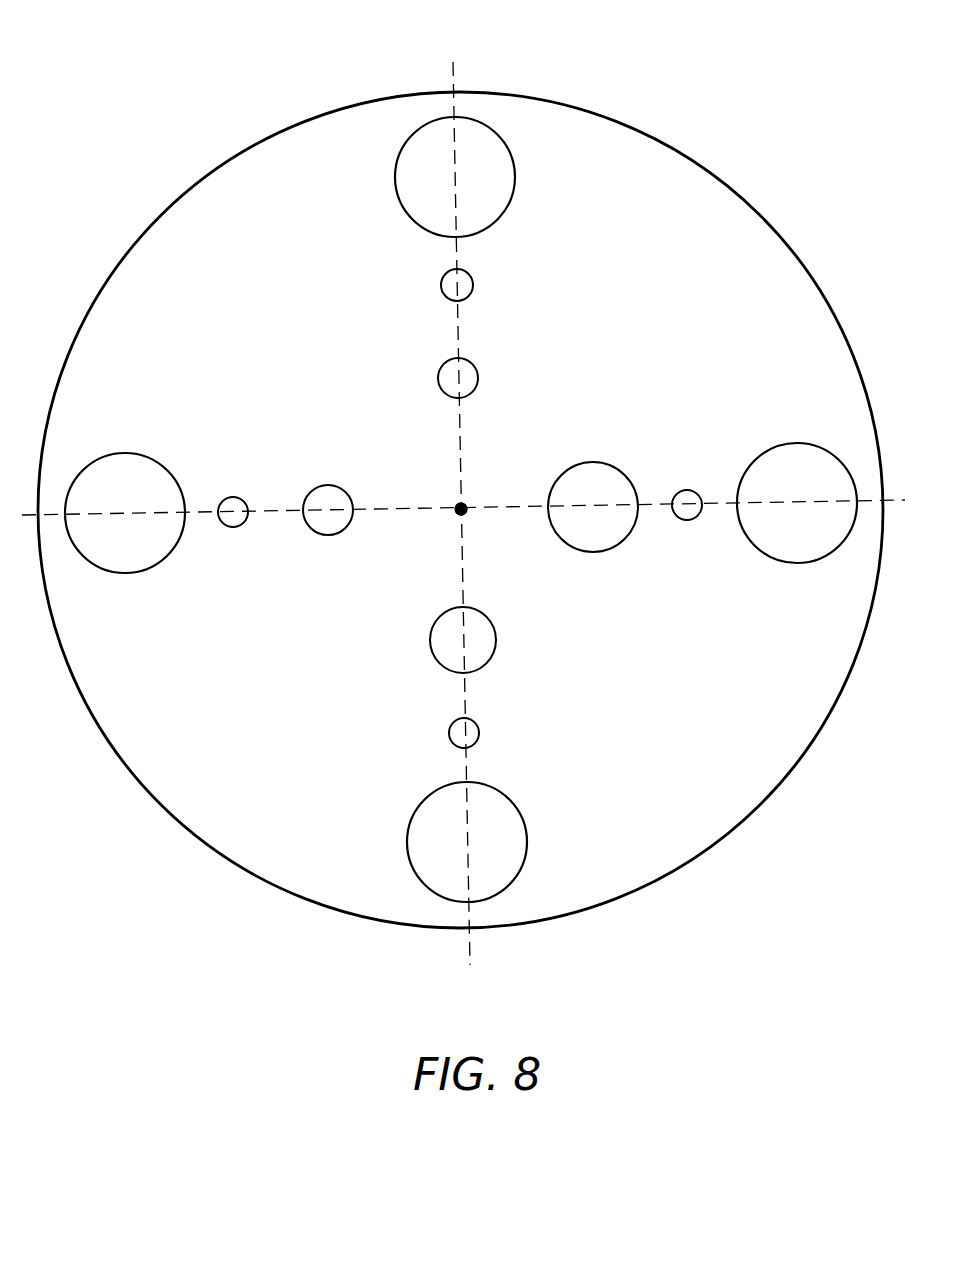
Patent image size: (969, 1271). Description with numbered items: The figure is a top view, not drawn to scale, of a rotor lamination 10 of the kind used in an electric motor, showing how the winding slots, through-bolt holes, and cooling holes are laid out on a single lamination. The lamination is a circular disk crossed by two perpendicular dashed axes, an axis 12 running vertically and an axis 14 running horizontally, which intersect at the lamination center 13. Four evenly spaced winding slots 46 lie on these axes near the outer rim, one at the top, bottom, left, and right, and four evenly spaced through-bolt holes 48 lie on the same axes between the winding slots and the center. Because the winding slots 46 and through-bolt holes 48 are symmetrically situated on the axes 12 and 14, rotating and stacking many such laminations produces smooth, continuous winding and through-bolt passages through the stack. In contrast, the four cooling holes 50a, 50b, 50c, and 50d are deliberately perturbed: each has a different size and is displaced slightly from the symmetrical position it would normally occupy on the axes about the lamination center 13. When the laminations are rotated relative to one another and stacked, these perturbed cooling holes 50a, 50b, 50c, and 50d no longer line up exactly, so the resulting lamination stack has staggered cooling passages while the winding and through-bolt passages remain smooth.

The rotor lamination 10 is at (612, 129).
The axis 12 is at (461, 442).
The lamination center 13 is at (455, 515).
The axis 14 is at (498, 508).
The winding slots 46 is at (513, 157).
The through-bolt holes 48 is at (472, 287).
The perturbed cooling hole 50a is at (478, 377).
The perturbed cooling hole 50b is at (325, 538).
The perturbed cooling hole 50c is at (432, 640).
The perturbed cooling hole 50d is at (586, 551).